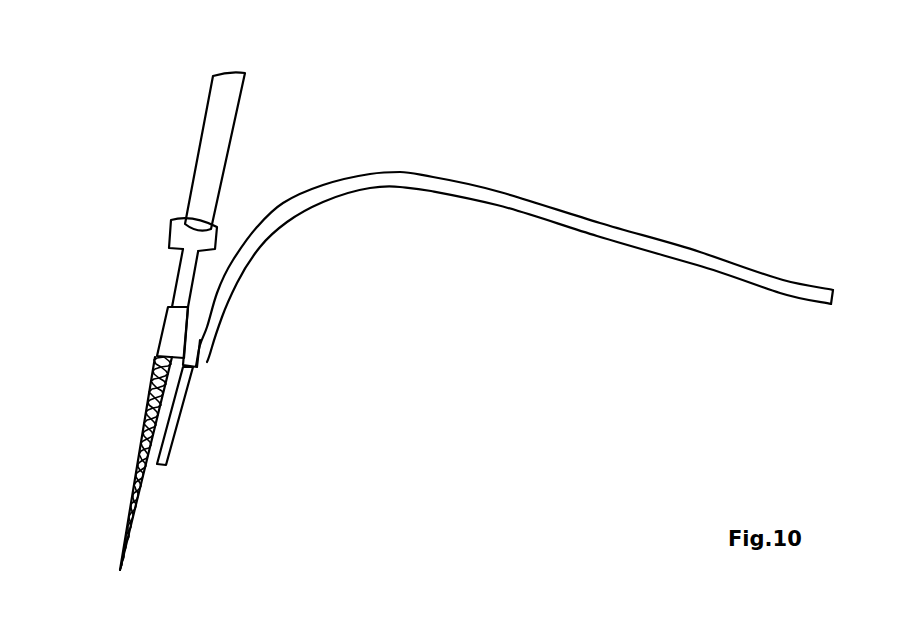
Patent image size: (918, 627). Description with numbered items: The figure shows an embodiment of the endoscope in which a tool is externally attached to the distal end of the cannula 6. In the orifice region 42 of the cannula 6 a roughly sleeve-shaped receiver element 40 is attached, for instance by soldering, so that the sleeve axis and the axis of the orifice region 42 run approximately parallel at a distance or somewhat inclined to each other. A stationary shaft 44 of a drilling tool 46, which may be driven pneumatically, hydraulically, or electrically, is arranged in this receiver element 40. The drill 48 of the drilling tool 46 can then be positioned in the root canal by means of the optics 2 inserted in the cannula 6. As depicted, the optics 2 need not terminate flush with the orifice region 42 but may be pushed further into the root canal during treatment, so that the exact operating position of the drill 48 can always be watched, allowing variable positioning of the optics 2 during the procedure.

The optics 2 is at (163, 467).
The cannula 6 is at (460, 186).
The receiver element 40 is at (197, 338).
The orifice region 42 is at (193, 368).
The stationary shaft 44 is at (177, 272).
The drilling tool 46 is at (166, 170).
The drill 48 is at (138, 486).